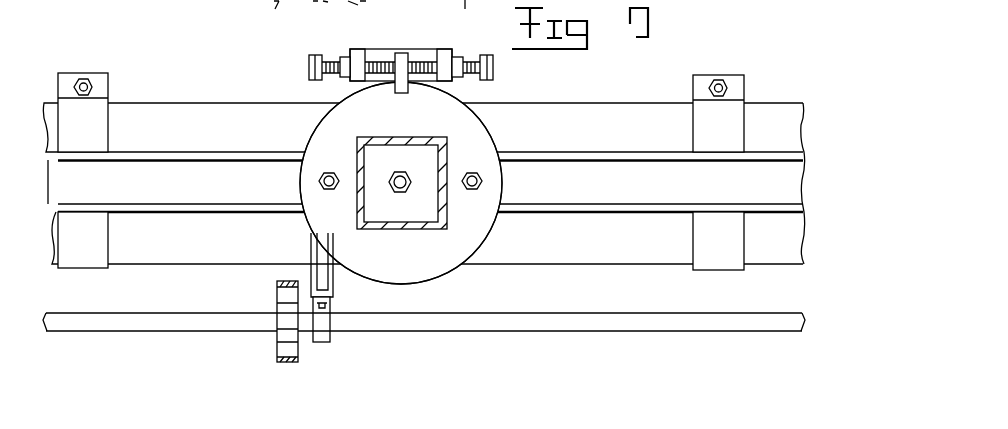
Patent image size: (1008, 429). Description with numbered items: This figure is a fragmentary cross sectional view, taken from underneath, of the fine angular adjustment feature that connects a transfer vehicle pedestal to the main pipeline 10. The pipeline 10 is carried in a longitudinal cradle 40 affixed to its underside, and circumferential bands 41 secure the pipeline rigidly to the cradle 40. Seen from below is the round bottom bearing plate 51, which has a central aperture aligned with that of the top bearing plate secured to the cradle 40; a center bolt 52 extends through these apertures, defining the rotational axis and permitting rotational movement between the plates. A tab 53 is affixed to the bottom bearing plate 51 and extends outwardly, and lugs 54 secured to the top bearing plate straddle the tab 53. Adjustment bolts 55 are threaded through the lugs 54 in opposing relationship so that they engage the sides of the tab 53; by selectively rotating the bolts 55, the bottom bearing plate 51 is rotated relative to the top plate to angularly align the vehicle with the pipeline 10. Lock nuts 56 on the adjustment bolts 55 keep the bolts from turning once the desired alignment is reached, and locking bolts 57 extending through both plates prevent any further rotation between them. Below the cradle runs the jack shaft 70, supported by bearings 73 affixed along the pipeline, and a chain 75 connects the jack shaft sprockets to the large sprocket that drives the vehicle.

The pipeline 10 is at (615, 115).
The longitudinal cradle 40 is at (203, 190).
The circumferential bands 41 is at (98, 117).
The bottom bearing plate 51 is at (472, 127).
The center bolt 52 is at (395, 190).
The tab 53 is at (402, 55).
The lugs 54 is at (357, 50).
The adjustment bolts 55 is at (308, 65).
The lock nuts 56 is at (342, 60).
The locking bolts 57 is at (327, 193).
The jack shaft 70 is at (533, 322).
The bearings 73 is at (325, 343).
The chain 75 is at (282, 363).